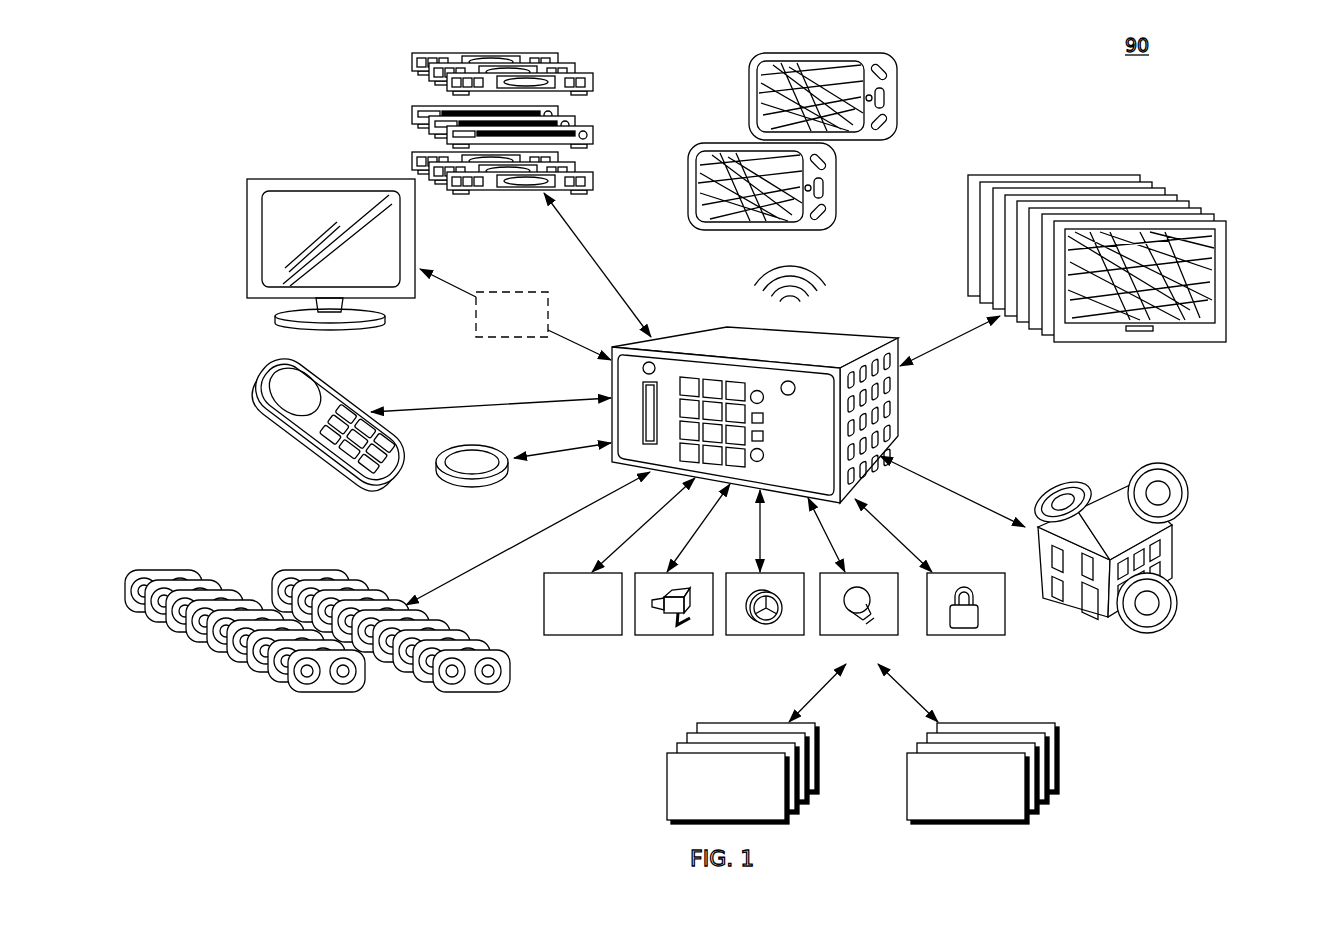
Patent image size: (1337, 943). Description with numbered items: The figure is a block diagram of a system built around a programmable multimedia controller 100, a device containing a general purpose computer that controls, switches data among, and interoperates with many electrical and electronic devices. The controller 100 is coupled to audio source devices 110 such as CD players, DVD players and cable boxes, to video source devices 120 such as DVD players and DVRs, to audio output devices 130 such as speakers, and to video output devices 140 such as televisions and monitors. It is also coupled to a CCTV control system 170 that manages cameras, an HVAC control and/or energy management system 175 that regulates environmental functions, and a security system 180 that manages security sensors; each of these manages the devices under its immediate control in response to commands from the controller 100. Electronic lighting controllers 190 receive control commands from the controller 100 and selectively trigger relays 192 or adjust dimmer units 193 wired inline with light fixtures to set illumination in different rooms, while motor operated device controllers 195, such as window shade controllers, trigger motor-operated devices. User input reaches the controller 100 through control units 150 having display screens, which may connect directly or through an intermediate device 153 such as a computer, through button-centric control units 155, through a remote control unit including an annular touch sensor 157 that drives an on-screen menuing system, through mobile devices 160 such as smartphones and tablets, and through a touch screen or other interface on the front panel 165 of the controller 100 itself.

The programmable multimedia controller 100 is at (898, 395).
The audio source devices 110 is at (232, 660).
The video source devices 120 is at (412, 63).
The audio output devices 130 is at (1118, 490).
The video output devices 140 is at (1226, 282).
The control units 150 is at (247, 208).
The intermediate device 153 is at (498, 327).
The button-centric control units 155 is at (303, 431).
The remote control unit including an annular touch sensor 157 is at (451, 480).
The mobile devices 160 is at (749, 100).
The front panel 165 is at (790, 381).
The CCTV control system 170 is at (668, 573).
The HVAC control and/or energy management system 175 is at (752, 573).
The security system 180 is at (950, 573).
The electronic lighting controllers 190 is at (853, 573).
The relays 192 is at (711, 810).
The dimmer units 193 is at (951, 810).
The motor operated device controllers 195 is at (578, 573).